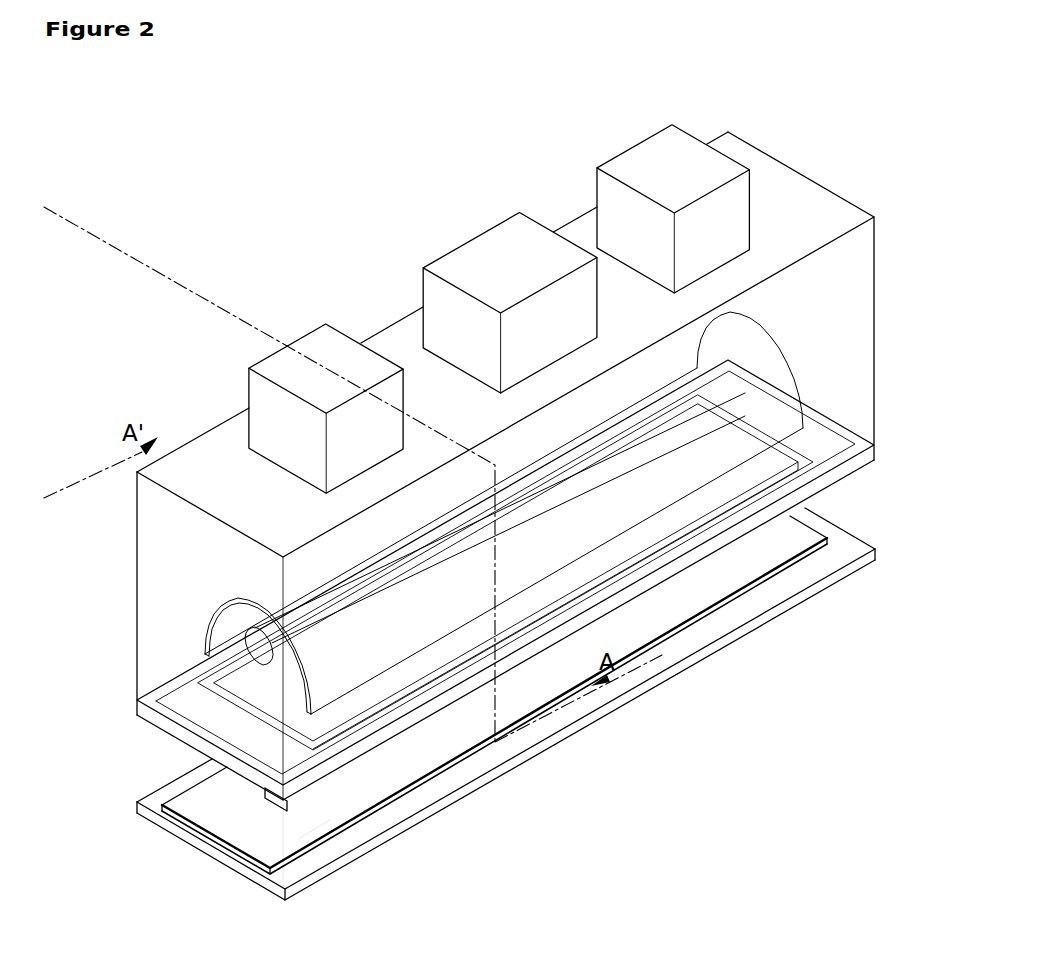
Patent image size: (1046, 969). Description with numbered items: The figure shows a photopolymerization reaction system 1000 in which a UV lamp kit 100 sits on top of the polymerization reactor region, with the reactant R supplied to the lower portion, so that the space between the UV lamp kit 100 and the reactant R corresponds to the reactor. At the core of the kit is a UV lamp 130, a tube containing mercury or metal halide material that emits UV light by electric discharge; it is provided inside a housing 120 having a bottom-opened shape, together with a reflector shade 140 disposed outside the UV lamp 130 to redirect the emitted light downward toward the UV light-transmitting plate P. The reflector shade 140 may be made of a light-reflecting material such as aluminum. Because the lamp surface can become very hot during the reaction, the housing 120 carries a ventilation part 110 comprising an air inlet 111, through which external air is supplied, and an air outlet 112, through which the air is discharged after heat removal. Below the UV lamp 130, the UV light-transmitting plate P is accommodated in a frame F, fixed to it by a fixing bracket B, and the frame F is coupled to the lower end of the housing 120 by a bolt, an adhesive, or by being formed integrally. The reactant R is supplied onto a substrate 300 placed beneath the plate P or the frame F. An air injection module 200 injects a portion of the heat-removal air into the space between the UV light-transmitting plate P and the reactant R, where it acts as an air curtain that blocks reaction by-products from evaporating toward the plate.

The photopolymerization reaction system 1000 is at (210, 149).
The UV lamp kit 100 is at (780, 122).
The ventilation part 110 is at (577, 148).
The air inlet 111 is at (327, 347).
The air outlet 112 is at (478, 247).
The housing 120 is at (148, 573).
The UV lamp 130 is at (245, 632).
The reflector shade 140 is at (702, 497).
The air injection module 200 is at (365, 757).
The substrate 300 is at (387, 833).
The fixing bracket B is at (202, 688).
The frame F is at (167, 730).
The UV light-transmitting plate P is at (258, 728).
The reactant R is at (312, 843).